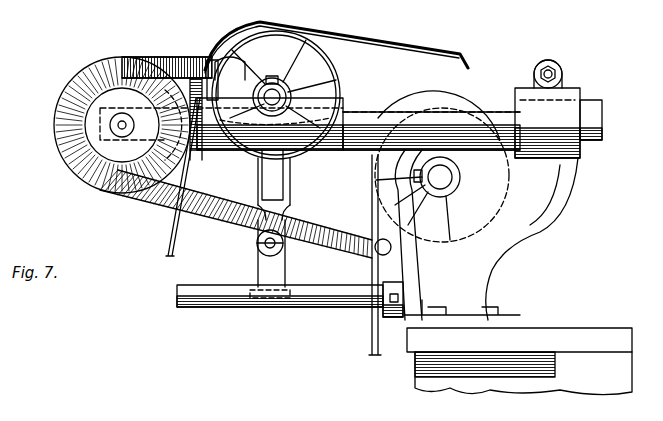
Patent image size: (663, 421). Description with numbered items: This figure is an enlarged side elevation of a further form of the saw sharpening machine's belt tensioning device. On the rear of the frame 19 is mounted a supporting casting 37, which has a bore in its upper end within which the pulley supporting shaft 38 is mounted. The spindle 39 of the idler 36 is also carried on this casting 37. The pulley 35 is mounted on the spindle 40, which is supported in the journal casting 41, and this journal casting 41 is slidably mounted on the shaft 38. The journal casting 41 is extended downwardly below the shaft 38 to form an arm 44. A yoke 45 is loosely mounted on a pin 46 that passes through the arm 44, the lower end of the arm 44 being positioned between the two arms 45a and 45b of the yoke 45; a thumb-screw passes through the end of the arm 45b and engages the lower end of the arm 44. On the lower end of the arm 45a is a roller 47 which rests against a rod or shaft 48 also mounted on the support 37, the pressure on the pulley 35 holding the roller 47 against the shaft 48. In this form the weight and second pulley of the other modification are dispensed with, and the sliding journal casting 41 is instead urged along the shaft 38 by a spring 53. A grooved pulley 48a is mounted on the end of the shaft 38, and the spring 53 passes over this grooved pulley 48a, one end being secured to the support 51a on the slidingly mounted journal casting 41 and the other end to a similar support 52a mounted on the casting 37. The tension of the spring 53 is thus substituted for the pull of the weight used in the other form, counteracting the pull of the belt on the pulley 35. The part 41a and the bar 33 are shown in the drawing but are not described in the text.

The frame 19 is at (600, 378).
The guard bar 33 is at (472, 104).
The pulley 35 is at (333, 62).
The idler 36 is at (430, 112).
The supporting casting 37 is at (502, 265).
The pulley supporting shaft 38 is at (378, 120).
The spindle 39 is at (446, 188).
The spindle 40 is at (272, 96).
The journal casting 41 is at (342, 116).
The bearing ring 41a is at (285, 95).
The arm 44 is at (262, 168).
The yoke 45 is at (286, 180).
The arm of yoke 45a is at (276, 262).
The arm of yoke 45b is at (284, 200).
The pin 46 is at (258, 248).
The roller 47 is at (258, 307).
The rod or shaft 48 is at (203, 306).
The grooved pulley 48a is at (82, 124).
The support 51a is at (232, 62).
The support 52a is at (388, 255).
The spring 53 is at (232, 222).